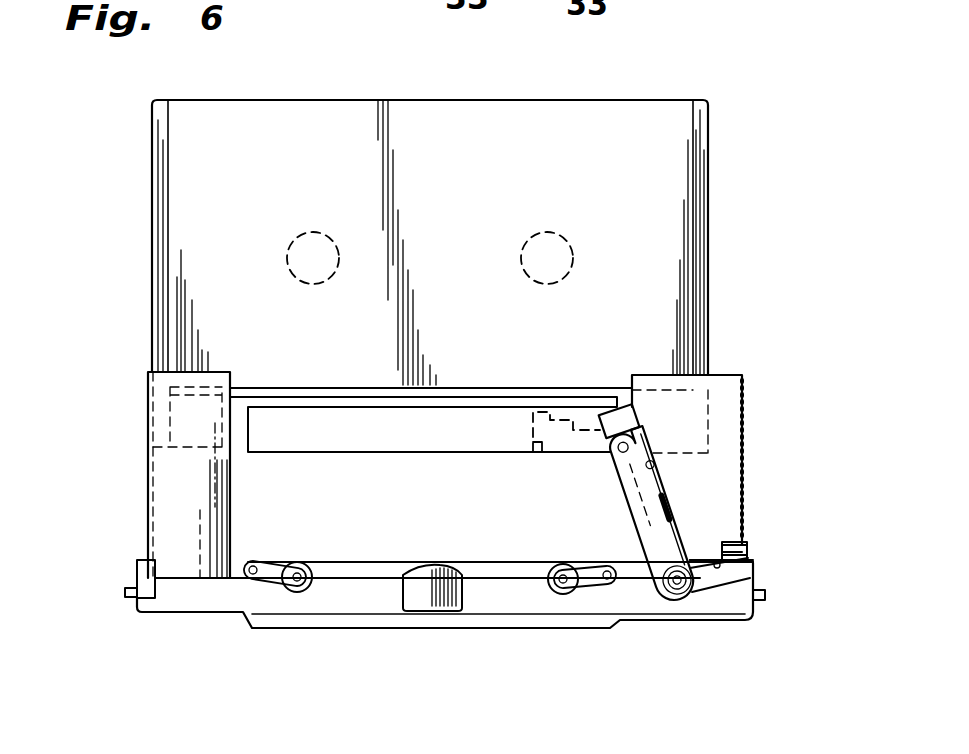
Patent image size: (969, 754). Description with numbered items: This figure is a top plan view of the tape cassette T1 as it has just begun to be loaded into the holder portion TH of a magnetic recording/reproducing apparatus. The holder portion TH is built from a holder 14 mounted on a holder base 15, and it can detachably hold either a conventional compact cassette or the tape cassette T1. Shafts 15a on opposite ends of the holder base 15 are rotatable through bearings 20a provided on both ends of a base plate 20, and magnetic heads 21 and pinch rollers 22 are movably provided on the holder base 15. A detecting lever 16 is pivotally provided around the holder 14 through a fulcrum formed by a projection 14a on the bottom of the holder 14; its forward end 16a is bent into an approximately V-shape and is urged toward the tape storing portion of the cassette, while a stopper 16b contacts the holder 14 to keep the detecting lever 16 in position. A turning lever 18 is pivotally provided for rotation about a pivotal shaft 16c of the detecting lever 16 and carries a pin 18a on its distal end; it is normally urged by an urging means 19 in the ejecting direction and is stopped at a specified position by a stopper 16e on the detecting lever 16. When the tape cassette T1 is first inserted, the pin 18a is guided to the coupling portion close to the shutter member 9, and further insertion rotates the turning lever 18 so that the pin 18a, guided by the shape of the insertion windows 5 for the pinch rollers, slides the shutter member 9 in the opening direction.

The tape cassette T1 is at (448, 143).
The holder portion TH is at (135, 405).
The insertion windows 5 is at (567, 416).
The shutter member 9 is at (272, 428).
The holder 14 is at (180, 487).
The projection 14a is at (737, 622).
The holder base 15 is at (357, 570).
The shafts 15a is at (127, 593).
The detecting lever 16 is at (670, 482).
The forward end 16a is at (635, 407).
The stopper 16b is at (743, 533).
The pivotal shaft 16c is at (690, 612).
The stopper 16e is at (665, 445).
The turning lever 18 is at (630, 500).
The pin 18a is at (598, 442).
The urging means 19 is at (650, 612).
The base plate 20 is at (196, 618).
The bearings 20a is at (138, 612).
The magnetic heads 21 is at (423, 583).
The pinch rollers 22 is at (290, 590).